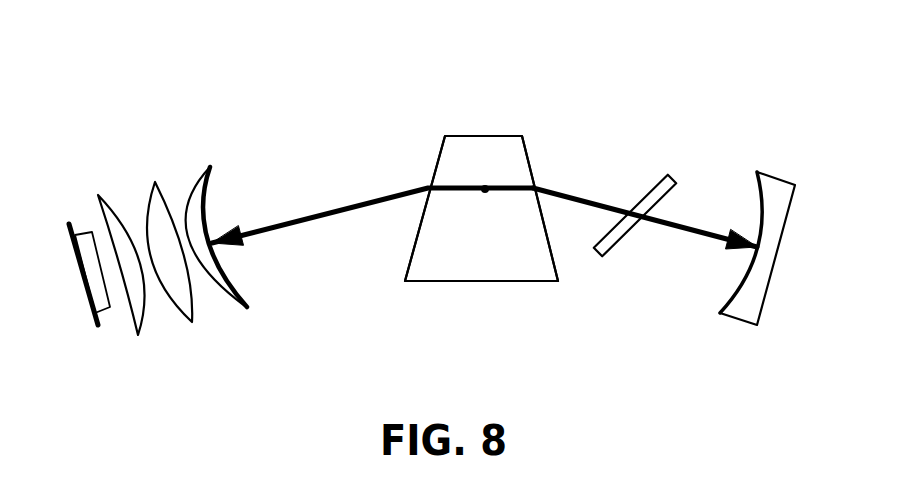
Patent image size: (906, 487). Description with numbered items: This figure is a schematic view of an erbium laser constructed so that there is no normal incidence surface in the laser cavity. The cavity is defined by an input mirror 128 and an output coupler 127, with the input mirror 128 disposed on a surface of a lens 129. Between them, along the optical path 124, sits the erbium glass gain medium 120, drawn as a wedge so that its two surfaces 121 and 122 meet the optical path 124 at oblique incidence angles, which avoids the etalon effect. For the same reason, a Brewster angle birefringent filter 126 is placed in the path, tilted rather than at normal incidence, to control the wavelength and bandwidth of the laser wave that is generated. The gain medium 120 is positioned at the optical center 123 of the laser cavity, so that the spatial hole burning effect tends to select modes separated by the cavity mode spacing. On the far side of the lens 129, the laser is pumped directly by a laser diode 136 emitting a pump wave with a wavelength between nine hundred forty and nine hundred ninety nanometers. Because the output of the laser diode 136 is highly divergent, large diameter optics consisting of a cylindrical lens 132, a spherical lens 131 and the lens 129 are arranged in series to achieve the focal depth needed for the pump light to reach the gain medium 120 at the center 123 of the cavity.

The erbium glass gain medium 120 is at (487, 283).
The surface of the gain medium 121 is at (410, 257).
The surface of the gain medium 122 is at (553, 257).
The optical center of the laser cavity 123 is at (489, 172).
The optical path 124 is at (619, 194).
The Brewster angle birefringent filter 126 is at (622, 243).
The output coupler 127 is at (756, 241).
The input mirror 128 is at (203, 223).
The lens 129 is at (207, 267).
The spherical lens 131 is at (170, 282).
The cylindrical lens 132 is at (135, 293).
The laser diode 136 is at (103, 313).